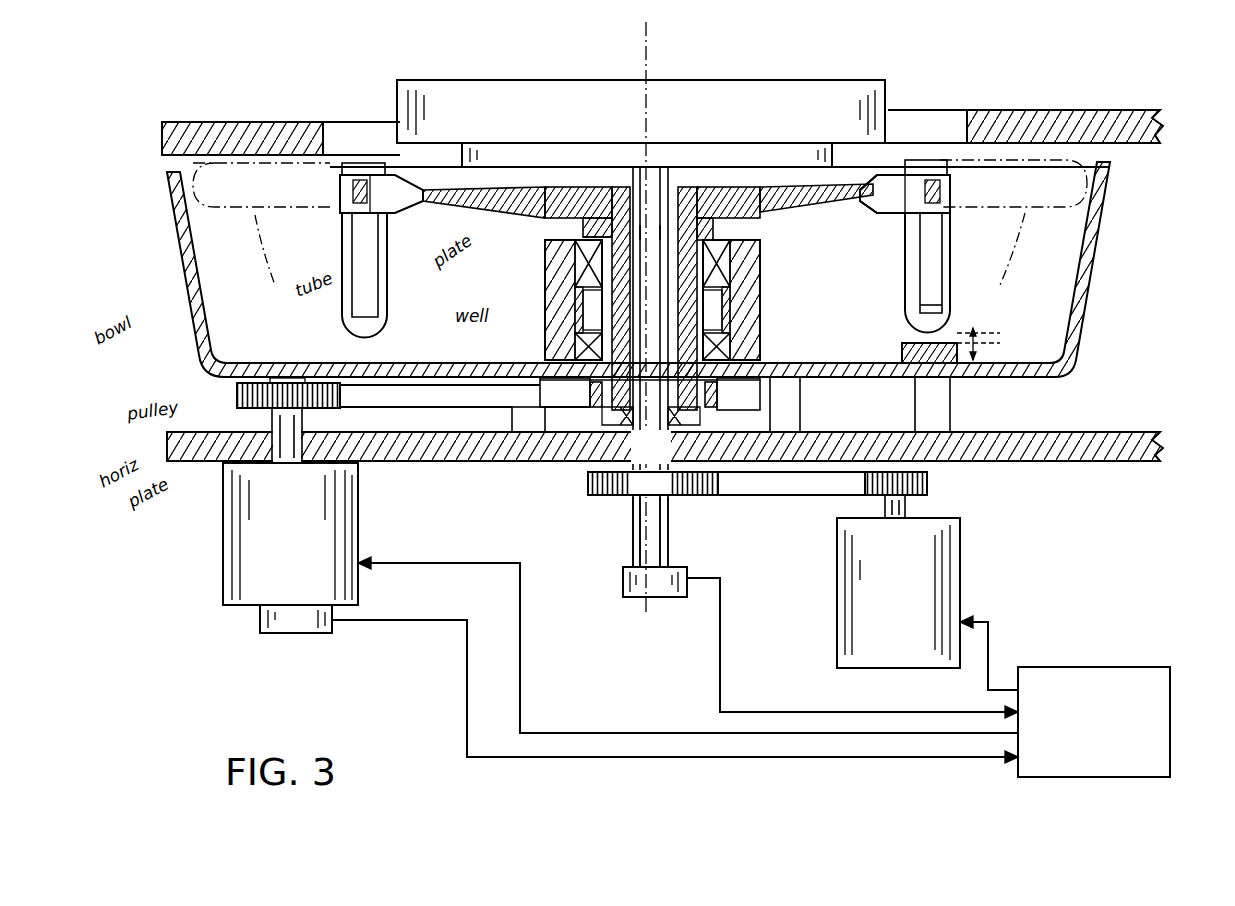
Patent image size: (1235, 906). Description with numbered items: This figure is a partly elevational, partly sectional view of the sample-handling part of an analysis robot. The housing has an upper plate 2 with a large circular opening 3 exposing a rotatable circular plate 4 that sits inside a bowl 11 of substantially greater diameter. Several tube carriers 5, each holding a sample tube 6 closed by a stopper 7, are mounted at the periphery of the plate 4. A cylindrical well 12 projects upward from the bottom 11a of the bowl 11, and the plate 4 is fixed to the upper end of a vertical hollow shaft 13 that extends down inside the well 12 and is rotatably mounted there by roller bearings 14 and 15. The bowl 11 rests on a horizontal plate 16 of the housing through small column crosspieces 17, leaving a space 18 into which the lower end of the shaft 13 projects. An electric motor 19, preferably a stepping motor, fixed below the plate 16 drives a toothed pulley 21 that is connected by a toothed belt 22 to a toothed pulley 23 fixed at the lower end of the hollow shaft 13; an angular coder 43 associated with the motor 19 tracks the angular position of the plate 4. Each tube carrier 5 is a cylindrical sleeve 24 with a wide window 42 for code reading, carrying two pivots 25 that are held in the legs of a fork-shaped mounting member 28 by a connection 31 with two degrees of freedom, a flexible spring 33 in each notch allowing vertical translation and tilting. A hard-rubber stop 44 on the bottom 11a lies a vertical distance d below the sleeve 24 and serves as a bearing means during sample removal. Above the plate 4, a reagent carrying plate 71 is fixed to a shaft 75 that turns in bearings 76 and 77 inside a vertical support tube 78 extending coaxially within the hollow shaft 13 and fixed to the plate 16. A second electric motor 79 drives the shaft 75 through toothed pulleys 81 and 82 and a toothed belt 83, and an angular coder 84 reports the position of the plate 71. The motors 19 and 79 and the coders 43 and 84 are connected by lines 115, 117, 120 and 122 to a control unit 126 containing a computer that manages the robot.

The upper plate 2 is at (197, 122).
The circular opening 3 is at (330, 122).
The circular plate 4 is at (475, 205).
The tube carrier 5 is at (387, 300).
The sample tube 6 is at (352, 265).
The stopper 7 is at (360, 163).
The bowl 11 is at (186, 295).
The bottom of the bowl 11a is at (300, 363).
The cylindrical well 12 is at (545, 305).
The hollow shaft 13 is at (583, 232).
The roller bearing 14 is at (545, 262).
The roller bearing 15 is at (545, 345).
The horizontal plate 16 is at (180, 440).
The column crosspiece 17 is at (525, 432).
The space 18 is at (445, 432).
The electric motor 19 is at (223, 565).
The toothed pulley 21 is at (237, 393).
The toothed belt 22 is at (400, 410).
The toothed pulley 23 is at (572, 410).
The cylindrical sleeve 24 is at (905, 268).
The pivot 25 is at (948, 178).
The mounting member 28 is at (888, 203).
The connection with two degrees of freedom 31 is at (952, 215).
The flexible spring 33 is at (928, 200).
The window 42 is at (930, 313).
The angular coder 43 is at (290, 633).
The stop 44 is at (902, 350).
The reagent carrying plate 71 is at (795, 80).
The shaft 75 is at (655, 230).
The bearing 76 is at (655, 190).
The bearing 77 is at (700, 413).
The vertical support tube 78 is at (690, 310).
The electric motor 79 is at (955, 580).
The toothed pulley 81 is at (927, 480).
The toothed pulley 82 is at (590, 497).
The toothed belt 83 is at (783, 487).
The angular coder 84 is at (643, 597).
The line 115 is at (597, 733).
The line 117 is at (990, 632).
The line 120 is at (600, 760).
The line 122 is at (787, 700).
The control unit 126 is at (1170, 722).
The vertical distance d is at (990, 340).